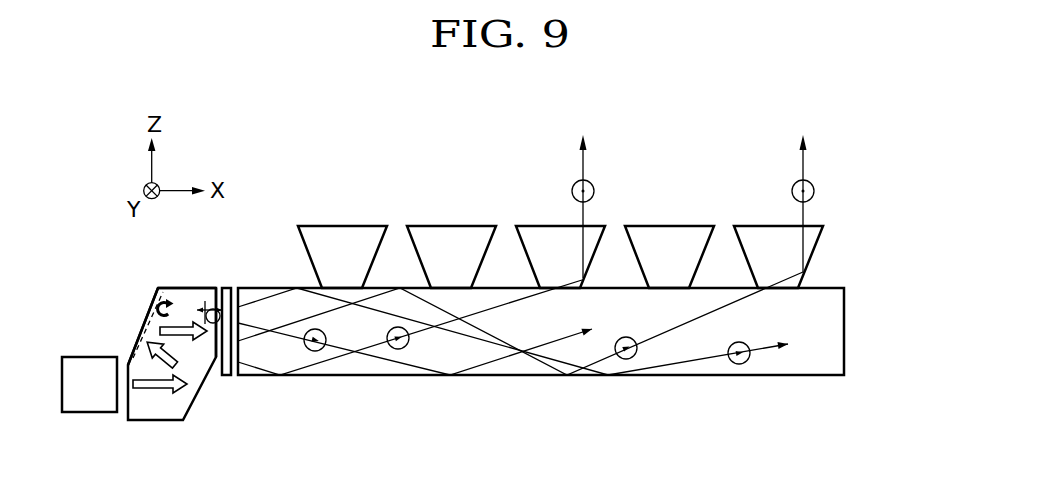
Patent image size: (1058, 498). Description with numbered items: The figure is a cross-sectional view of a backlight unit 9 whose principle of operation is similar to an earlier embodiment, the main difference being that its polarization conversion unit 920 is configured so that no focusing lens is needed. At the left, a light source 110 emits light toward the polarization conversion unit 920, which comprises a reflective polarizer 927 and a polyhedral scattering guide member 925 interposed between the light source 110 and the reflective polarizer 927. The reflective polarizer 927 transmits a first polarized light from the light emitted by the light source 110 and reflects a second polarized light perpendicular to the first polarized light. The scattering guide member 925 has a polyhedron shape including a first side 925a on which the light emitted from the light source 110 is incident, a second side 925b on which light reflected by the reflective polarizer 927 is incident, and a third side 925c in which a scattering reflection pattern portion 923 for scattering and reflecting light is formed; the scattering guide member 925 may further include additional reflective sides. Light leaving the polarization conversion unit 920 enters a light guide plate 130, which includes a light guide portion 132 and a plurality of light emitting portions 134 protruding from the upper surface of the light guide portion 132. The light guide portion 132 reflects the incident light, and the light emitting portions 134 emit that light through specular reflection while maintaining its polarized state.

The backlight unit 9 is at (878, 171).
The light source 110 is at (90, 413).
The polarization conversion unit 920 is at (235, 440).
The scattering reflection pattern portion 923 is at (148, 322).
The polyhedral scattering guide member 925 is at (192, 287).
The first side 925a is at (128, 367).
The second side 925b is at (214, 343).
The third side 925c is at (157, 289).
The reflective polarizer 927 is at (228, 287).
The light guide plate 130 is at (903, 228).
The light guide portion 132 is at (843, 340).
The light emitting portions 134 is at (818, 237).